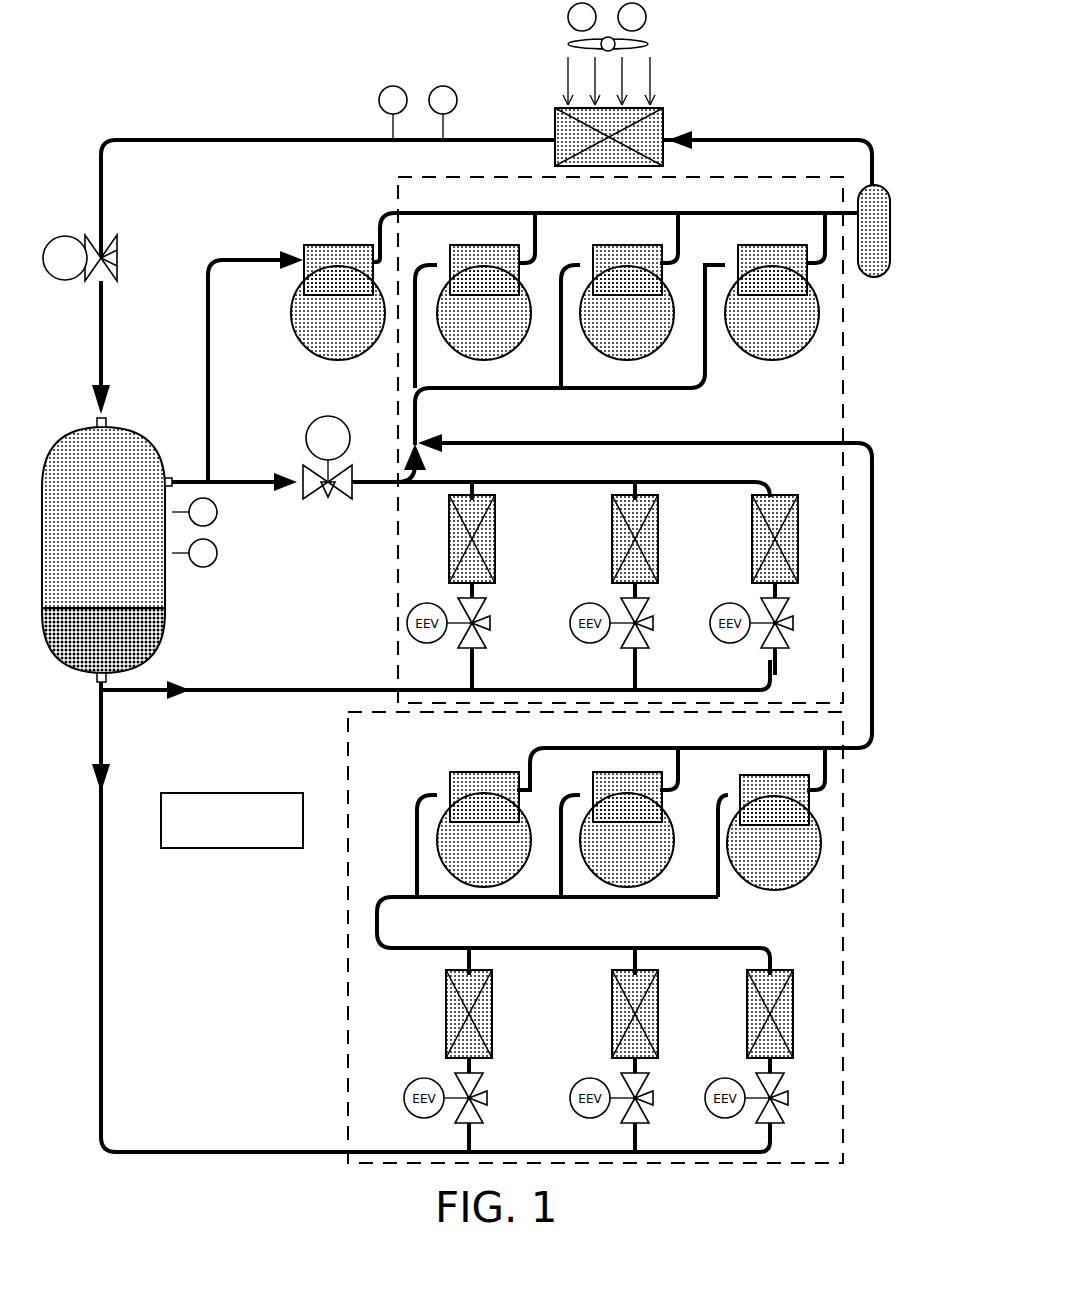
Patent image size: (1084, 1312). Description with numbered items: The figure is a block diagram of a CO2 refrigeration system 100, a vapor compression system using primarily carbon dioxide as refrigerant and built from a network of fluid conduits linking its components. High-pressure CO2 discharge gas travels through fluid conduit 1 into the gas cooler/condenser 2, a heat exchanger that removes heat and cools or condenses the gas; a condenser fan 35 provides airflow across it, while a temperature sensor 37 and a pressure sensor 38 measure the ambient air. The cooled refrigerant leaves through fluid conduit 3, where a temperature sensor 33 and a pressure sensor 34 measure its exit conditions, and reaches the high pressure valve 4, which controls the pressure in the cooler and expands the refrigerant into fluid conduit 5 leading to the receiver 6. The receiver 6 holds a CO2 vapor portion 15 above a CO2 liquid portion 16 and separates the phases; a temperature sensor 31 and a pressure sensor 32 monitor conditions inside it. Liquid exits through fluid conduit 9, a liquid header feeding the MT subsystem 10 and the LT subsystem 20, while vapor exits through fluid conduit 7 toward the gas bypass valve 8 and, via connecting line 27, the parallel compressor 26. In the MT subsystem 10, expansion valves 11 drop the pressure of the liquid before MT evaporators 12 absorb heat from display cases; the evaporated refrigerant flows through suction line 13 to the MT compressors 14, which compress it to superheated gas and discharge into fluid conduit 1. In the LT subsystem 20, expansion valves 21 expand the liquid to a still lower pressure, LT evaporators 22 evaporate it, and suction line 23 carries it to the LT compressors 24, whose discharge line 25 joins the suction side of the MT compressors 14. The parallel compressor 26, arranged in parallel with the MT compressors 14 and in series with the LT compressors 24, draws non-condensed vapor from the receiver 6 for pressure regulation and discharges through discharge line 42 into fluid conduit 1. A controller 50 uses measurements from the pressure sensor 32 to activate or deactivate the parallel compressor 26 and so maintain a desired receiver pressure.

The CO2 refrigeration system 100 is at (183, 74).
The fluid conduit 1 is at (876, 146).
The gas cooler/condenser 2 is at (556, 108).
The fluid conduit 3 is at (319, 138).
The high pressure valve 4 is at (67, 236).
The fluid conduit 5 is at (103, 328).
The receiver 6 is at (166, 588).
The fluid conduit 7 is at (239, 480).
The gas bypass valve 8 is at (329, 416).
The fluid conduit 9 is at (258, 692).
The MT subsystem 10 is at (843, 385).
The expansion valve 11 is at (430, 602).
The MT evaporator 12 is at (447, 525).
The suction line 13 is at (415, 400).
The MT compressor 14 is at (505, 353).
The CO2 vapor portion 15 is at (134, 540).
The CO2 liquid portion 16 is at (142, 642).
The LT subsystem 20 is at (843, 892).
The expansion valve 21 is at (424, 1078).
The LT evaporator 22 is at (445, 1003).
The suction line 23 is at (378, 920).
The LT compressor 24 is at (517, 870).
The discharge line 25 is at (870, 755).
The parallel compressor 26 is at (306, 350).
The connecting line 27 is at (228, 262).
The temperature sensor 31 is at (217, 512).
The pressure sensor 32 is at (217, 553).
The temperature sensor 33 is at (443, 86).
The pressure sensor 34 is at (393, 86).
The condenser fan 35 is at (562, 46).
The temperature sensor 37 is at (646, 17).
The pressure sensor 38 is at (568, 17).
The discharge line 42 is at (446, 216).
The controller 50 is at (265, 793).